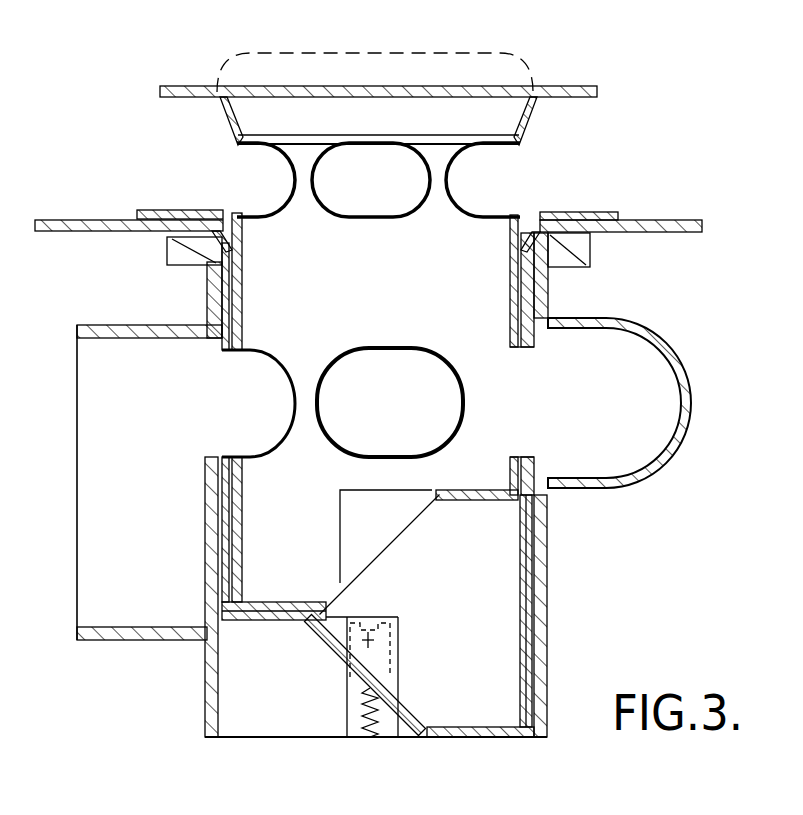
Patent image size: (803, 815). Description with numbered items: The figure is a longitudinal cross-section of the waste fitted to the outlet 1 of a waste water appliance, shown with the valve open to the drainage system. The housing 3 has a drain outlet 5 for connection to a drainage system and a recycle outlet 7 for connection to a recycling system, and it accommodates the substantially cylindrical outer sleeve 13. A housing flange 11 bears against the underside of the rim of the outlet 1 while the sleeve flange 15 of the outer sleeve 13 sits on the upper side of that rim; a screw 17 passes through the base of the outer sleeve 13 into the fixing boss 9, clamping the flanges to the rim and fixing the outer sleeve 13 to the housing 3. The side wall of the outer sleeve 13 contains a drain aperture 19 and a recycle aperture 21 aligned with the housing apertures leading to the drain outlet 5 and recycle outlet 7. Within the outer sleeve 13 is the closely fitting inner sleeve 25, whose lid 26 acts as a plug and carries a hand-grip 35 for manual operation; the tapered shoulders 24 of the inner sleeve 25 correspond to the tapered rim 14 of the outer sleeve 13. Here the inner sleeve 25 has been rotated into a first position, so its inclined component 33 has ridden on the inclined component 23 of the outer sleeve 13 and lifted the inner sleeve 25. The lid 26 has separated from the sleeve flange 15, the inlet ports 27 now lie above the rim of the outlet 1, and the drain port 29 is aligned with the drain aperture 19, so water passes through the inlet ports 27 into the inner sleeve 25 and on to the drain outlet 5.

The outlet 1 is at (113, 220).
The housing 3 is at (545, 547).
The drain outlet 5 is at (160, 397).
The recycle outlet 7 is at (648, 428).
The fixing boss 9 is at (358, 689).
The housing flange 11 is at (173, 252).
The outer sleeve 13 is at (523, 607).
The tapered rim 14 is at (230, 213).
The sleeve flange 15 is at (172, 212).
The screw 17 is at (375, 737).
The drain aperture 19 is at (227, 350).
The recycle aperture 21 is at (530, 353).
The inclined component 23 is at (333, 653).
The tapered shoulders 24 is at (530, 115).
The inner sleeve 25 is at (513, 300).
The lid 26 is at (367, 86).
The inlet ports 27 is at (363, 175).
The drain port 29 is at (238, 418).
The inclined component 33 is at (388, 540).
The hand-grip 35 is at (465, 72).